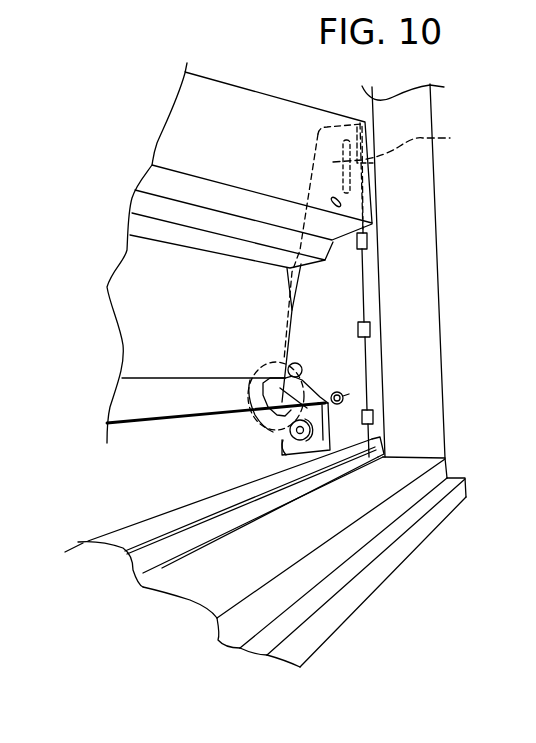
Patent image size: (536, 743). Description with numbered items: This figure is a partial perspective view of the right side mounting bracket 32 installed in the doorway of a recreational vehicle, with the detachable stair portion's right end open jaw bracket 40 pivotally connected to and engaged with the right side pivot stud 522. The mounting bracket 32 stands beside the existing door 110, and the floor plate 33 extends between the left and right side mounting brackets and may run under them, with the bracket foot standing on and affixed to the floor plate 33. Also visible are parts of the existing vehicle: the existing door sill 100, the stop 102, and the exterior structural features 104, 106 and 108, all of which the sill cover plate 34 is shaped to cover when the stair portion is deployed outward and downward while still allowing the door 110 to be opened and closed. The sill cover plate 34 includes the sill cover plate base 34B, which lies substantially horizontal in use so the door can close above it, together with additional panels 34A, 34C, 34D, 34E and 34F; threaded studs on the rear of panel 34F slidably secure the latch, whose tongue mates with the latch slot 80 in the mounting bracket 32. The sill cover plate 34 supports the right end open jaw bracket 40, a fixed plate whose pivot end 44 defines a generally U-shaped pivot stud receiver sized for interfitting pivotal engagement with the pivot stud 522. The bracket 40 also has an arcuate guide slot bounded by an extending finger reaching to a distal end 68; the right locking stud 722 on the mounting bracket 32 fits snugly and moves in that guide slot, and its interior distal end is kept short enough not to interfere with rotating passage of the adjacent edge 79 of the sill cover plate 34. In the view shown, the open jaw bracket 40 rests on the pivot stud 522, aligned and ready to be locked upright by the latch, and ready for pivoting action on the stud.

The sill cover plate 34 is at (214, 329).
The sill cover plate panel 34A is at (115, 412).
The sill cover plate base 34B is at (123, 318).
The sill cover plate panel 34C is at (143, 227).
The sill cover plate panel 34D is at (137, 204).
The sill cover plate panel 34E is at (150, 178).
The sill cover plate panel 34F is at (178, 132).
The latch slot 80 is at (404, 148).
The door 110 is at (430, 436).
The right side mounting bracket 32 is at (352, 278).
The distal end 68 is at (301, 365).
The edge 79 is at (302, 382).
The right locking stud 722 is at (345, 398).
The right side pivot stud 522 is at (290, 432).
The right end open jaw bracket 40 is at (327, 423).
The pivot end 44 is at (323, 442).
The floor plate 33 is at (167, 517).
The stop 102 is at (147, 563).
The existing door sill 100 is at (190, 597).
The exterior structural feature 104 is at (227, 638).
The exterior structural feature 106 is at (260, 647).
The exterior structural feature 108 is at (310, 628).